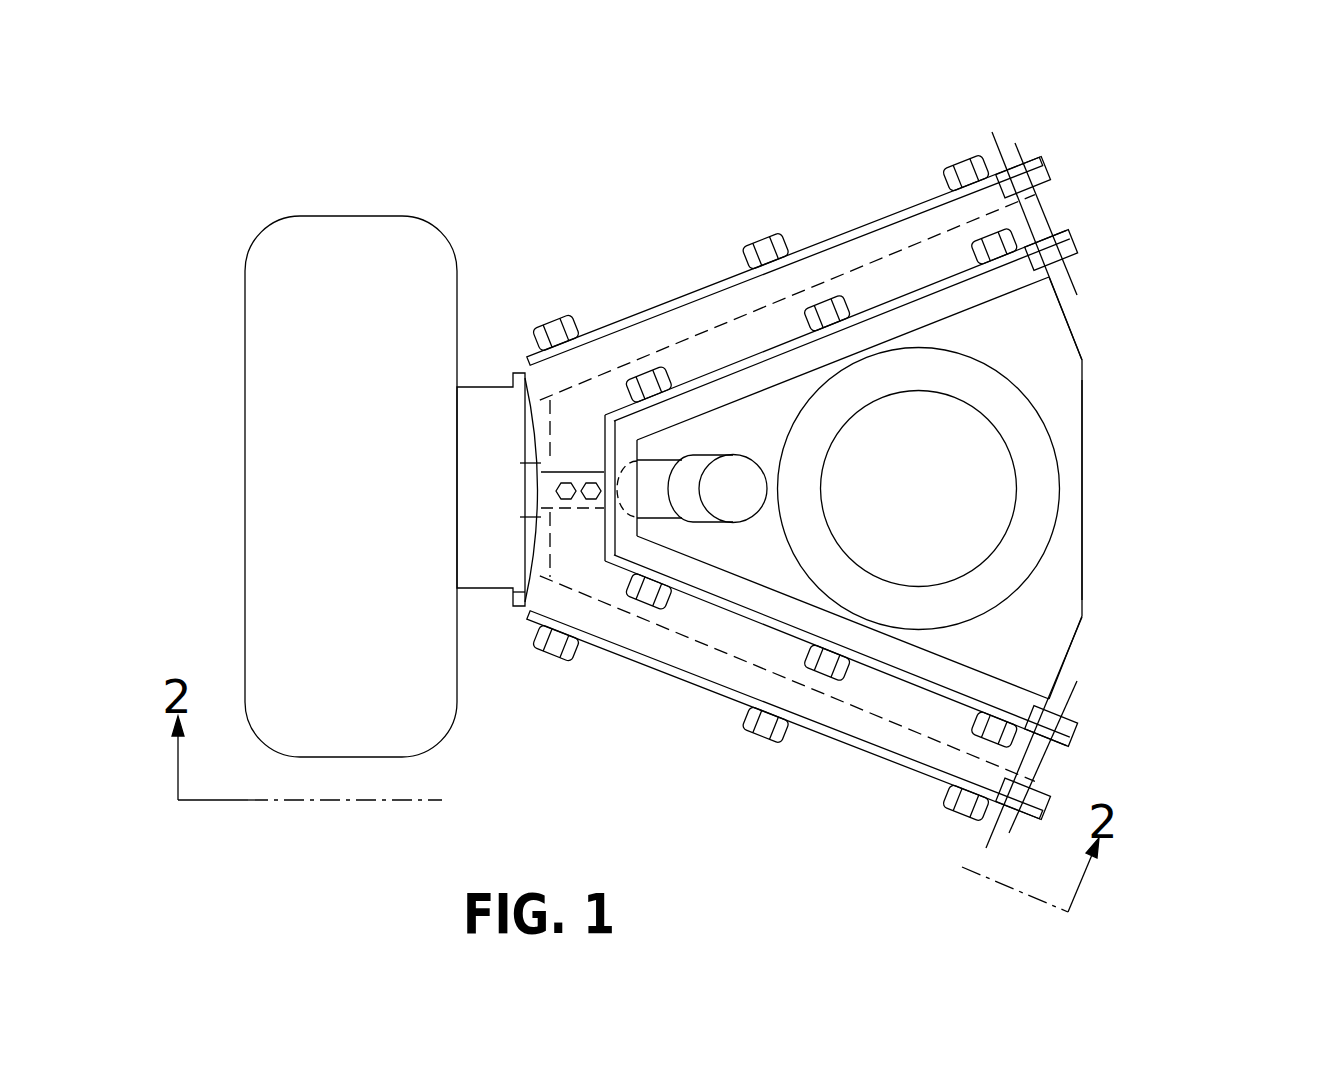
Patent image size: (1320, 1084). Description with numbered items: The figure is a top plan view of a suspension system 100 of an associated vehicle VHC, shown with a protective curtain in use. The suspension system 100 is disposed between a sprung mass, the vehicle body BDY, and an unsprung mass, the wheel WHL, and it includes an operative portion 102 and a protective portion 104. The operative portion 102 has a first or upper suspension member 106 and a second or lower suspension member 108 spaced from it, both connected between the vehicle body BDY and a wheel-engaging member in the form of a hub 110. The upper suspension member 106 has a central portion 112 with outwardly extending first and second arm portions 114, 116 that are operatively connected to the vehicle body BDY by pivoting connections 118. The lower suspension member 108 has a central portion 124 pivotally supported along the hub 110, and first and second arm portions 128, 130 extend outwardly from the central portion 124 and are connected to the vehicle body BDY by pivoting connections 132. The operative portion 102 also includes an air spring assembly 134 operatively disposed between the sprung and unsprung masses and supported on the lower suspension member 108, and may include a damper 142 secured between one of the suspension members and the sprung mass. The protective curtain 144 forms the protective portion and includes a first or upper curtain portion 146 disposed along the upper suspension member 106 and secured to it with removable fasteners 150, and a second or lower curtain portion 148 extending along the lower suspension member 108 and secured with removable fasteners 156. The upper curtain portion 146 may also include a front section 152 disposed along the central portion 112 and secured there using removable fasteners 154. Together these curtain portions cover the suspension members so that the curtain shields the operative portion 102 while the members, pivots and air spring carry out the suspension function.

The suspension system 100 is at (548, 193).
The operative portion 102 is at (1055, 629).
The protective portion 104 is at (888, 256).
The first or upper suspension member 106 is at (920, 296).
The second or lower suspension member 108 is at (683, 662).
The hub 110 is at (500, 403).
The central portion 112 is at (630, 520).
The first arm portion 114 is at (745, 382).
The second arm portion 116 is at (897, 652).
The pivoting connections 118 is at (1068, 237).
The central portion 124 is at (535, 532).
The first arm portion 128 is at (853, 230).
The second arm portion 130 is at (950, 762).
The pivoting connections 132 is at (1035, 150).
The air spring assembly 134 is at (1072, 418).
The damper 142 is at (709, 430).
The protective curtain 144 is at (815, 300).
The first or upper curtain portion 146 is at (757, 632).
The second or lower curtain portion 148 is at (652, 640).
The removable fasteners 150 is at (1012, 232).
The front section 152 is at (570, 427).
The removable fasteners 154 is at (555, 492).
The removable fasteners 156 is at (962, 165).
The wheel WHL is at (265, 612).
The vehicle VHC is at (1170, 124).
The vehicle body BDY is at (1086, 342).